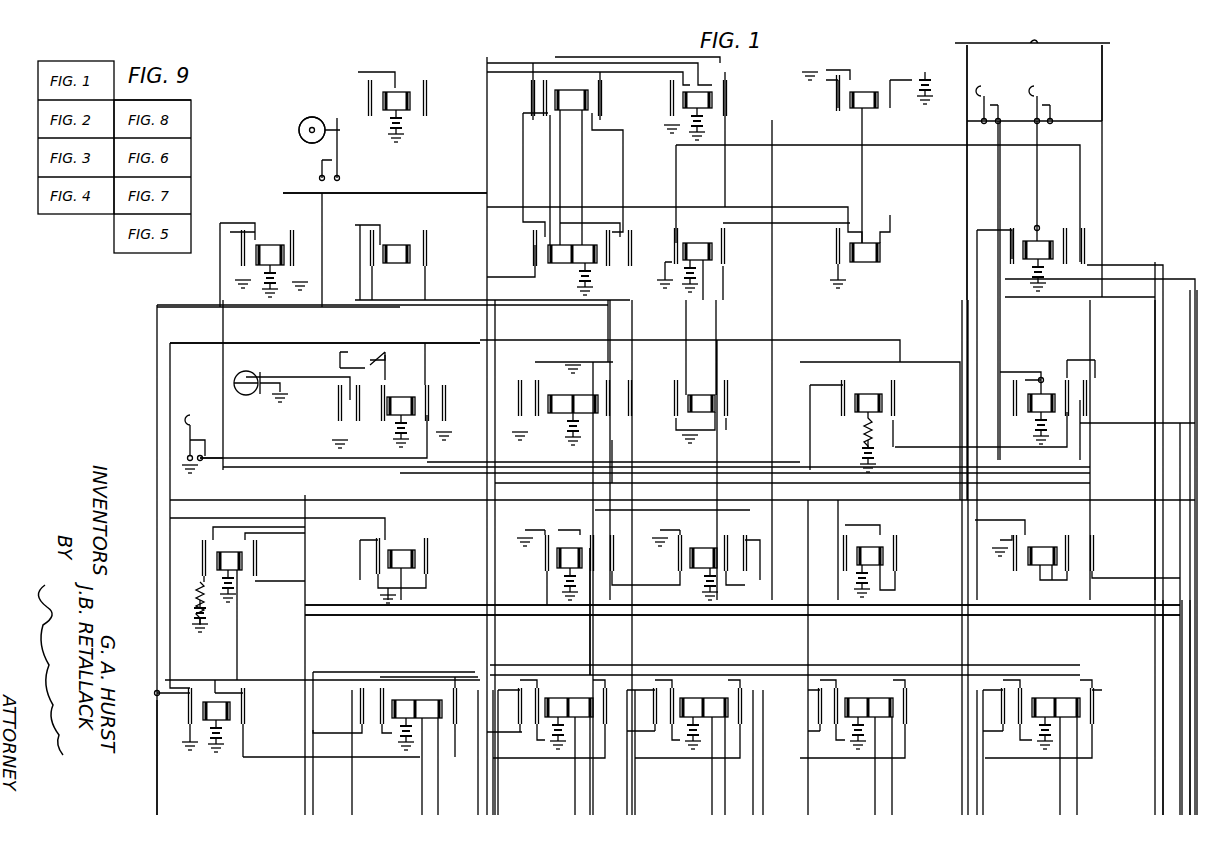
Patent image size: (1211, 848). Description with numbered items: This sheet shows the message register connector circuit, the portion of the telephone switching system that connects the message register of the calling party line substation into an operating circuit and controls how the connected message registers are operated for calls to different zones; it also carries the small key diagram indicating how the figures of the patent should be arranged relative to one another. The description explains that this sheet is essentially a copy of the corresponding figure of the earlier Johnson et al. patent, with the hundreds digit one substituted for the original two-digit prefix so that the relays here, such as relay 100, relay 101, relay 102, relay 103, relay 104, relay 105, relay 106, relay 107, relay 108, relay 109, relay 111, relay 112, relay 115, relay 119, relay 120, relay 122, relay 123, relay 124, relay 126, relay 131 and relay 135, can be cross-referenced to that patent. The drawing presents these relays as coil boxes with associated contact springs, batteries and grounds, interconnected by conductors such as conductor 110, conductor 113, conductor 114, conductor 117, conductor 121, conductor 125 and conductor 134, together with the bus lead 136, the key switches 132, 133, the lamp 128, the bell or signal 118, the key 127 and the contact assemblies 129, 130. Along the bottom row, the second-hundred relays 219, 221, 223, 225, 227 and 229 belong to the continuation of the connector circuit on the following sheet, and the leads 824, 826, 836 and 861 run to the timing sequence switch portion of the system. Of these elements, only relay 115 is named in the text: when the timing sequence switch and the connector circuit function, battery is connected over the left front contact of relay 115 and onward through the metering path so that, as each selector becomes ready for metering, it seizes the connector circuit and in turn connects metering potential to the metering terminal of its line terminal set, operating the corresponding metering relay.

The relay 100 is at (1040, 245).
The relay 101 is at (882, 403).
The relay 102 is at (712, 252).
The relay 103 is at (862, 243).
The relay 104 is at (850, 101).
The relay 105 is at (268, 245).
The relay 106 is at (688, 404).
The relay 107 is at (557, 559).
The relay 108 is at (1057, 556).
The relay 109 is at (883, 556).
The conductor 110 is at (490, 584).
The relay 111 is at (690, 559).
The relay 112 is at (565, 413).
The conductor 113 is at (637, 617).
The conductor 114 is at (591, 637).
The relay 115 is at (242, 561).
The conductor 117 is at (205, 343).
The bell 118 is at (340, 120).
The relay 119 is at (548, 254).
The relay 120 is at (555, 101).
The conductor 121 is at (475, 198).
The relay 122 is at (683, 101).
The relay 123 is at (410, 101).
The relay 124 is at (410, 254).
The conductor 125 is at (158, 789).
The relay 126 is at (415, 406).
The key switch 127 is at (192, 415).
The lamp 128 is at (248, 371).
The contact 129 is at (400, 345).
The contact 130 is at (352, 360).
The relay 131 is at (415, 559).
The key 132 is at (1042, 88).
The key 133 is at (988, 88).
The conductor 134 is at (967, 206).
The relay 135 is at (1055, 403).
The conductor 136 is at (1103, 62).
The relay 219 is at (1045, 698).
The relay 221 is at (872, 698).
The relay 223 is at (705, 698).
The relay 225 is at (560, 698).
The relay 227 is at (415, 700).
The relay 229 is at (230, 710).
The conductor 824 is at (1155, 450).
The conductor 826 is at (1160, 631).
The conductor 836 is at (1190, 672).
The conductor 861 is at (1185, 650).